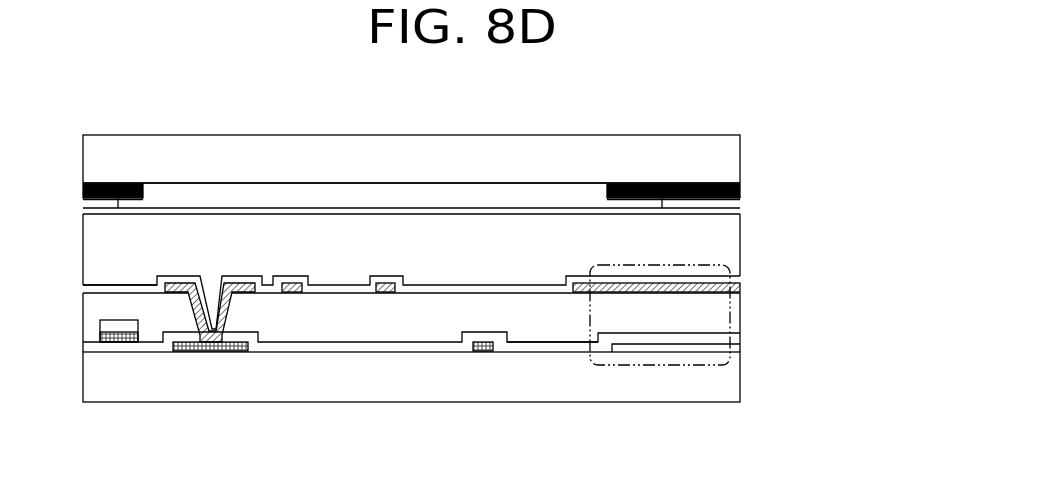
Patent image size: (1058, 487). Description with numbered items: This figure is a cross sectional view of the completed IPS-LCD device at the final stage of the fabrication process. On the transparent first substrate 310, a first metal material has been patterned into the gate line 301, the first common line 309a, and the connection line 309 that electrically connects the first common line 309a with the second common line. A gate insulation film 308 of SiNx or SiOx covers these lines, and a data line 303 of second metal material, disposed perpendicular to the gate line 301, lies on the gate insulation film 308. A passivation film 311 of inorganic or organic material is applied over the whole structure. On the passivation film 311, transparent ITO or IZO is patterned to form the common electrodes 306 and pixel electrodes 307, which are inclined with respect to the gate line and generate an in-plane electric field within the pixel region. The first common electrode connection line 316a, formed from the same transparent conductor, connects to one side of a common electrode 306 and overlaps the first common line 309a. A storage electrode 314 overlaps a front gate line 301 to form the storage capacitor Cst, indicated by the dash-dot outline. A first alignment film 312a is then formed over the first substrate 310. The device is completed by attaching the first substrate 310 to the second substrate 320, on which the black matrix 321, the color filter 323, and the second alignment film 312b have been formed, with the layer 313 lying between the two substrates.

The second substrate 320 is at (454, 145).
The color filter 323 is at (527, 190).
The black matrix 321 is at (657, 185).
The second alignment film 312b is at (737, 213).
The liquid crystal layer 313 is at (737, 243).
The storage electrode 314 is at (737, 290).
The first alignment film 312a is at (433, 287).
The passivation film 311 is at (732, 314).
The gate line 301 is at (732, 346).
The first substrate 310 is at (732, 382).
The data line 303 is at (117, 325).
The first common electrode connection line 316a is at (167, 292).
The first common line 309a is at (218, 351).
The common electrode 306 is at (291, 292).
The pixel electrode 307 is at (385, 292).
The connection line 309 is at (483, 351).
The gate insulation film 308 is at (552, 342).
The storage capacitor Cst is at (661, 366).